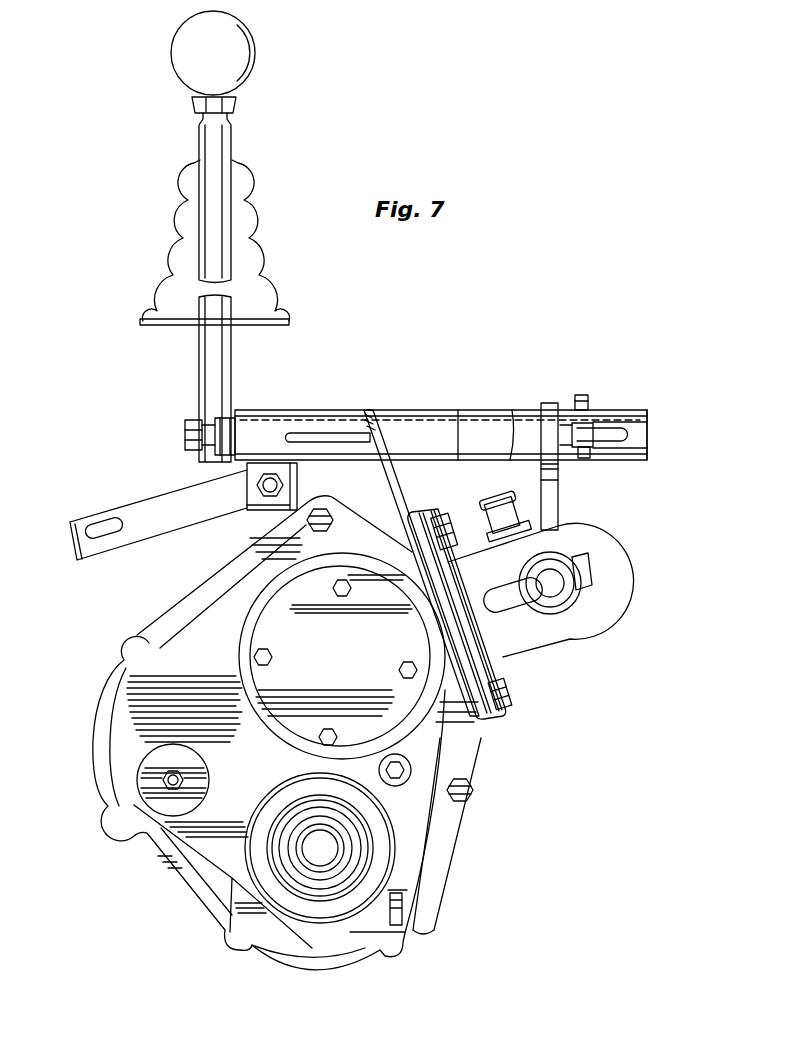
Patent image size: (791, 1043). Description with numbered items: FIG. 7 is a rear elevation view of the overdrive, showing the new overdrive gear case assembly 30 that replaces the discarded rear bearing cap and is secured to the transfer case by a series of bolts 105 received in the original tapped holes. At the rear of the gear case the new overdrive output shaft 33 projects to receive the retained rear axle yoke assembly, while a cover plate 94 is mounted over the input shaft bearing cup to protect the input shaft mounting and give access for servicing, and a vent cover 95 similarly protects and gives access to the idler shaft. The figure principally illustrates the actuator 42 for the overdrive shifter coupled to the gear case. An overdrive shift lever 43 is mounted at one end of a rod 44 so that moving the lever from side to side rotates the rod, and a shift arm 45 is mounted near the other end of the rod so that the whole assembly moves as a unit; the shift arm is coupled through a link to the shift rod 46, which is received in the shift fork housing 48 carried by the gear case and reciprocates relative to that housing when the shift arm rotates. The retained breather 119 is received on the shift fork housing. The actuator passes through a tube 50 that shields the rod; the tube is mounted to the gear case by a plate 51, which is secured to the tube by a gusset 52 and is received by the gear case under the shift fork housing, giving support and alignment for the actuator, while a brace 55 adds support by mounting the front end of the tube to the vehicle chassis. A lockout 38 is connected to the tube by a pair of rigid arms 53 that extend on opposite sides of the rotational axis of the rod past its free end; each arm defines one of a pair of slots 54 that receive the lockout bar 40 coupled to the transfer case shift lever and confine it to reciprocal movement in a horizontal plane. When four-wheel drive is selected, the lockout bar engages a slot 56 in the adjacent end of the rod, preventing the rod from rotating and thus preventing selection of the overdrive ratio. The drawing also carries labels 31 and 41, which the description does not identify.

The overdrive gear case assembly 30 is at (175, 905).
The cover plate 31 is at (177, 630).
The overdrive output shaft 33 is at (326, 858).
The lockout 38 is at (657, 465).
The lockout bar 40 is at (600, 445).
The stop tab 41 is at (586, 400).
The actuator 42 is at (372, 395).
The overdrive shift lever 43 is at (230, 168).
The rod 44 is at (238, 422).
The shift arm 45 is at (560, 505).
The shift rod 46 is at (556, 595).
The shift fork housing 48 is at (603, 606).
The tube 50 is at (428, 410).
The plate 51 is at (398, 480).
The gusset 52 is at (318, 436).
The rigid arms 53 is at (606, 419).
The slots 54 is at (628, 435).
The brace 55 is at (68, 538).
The slot 56 is at (570, 452).
The cover plate 94 is at (387, 693).
The vent cover 95 is at (160, 772).
The bolts 105 is at (360, 488).
The breather 119 is at (505, 506).